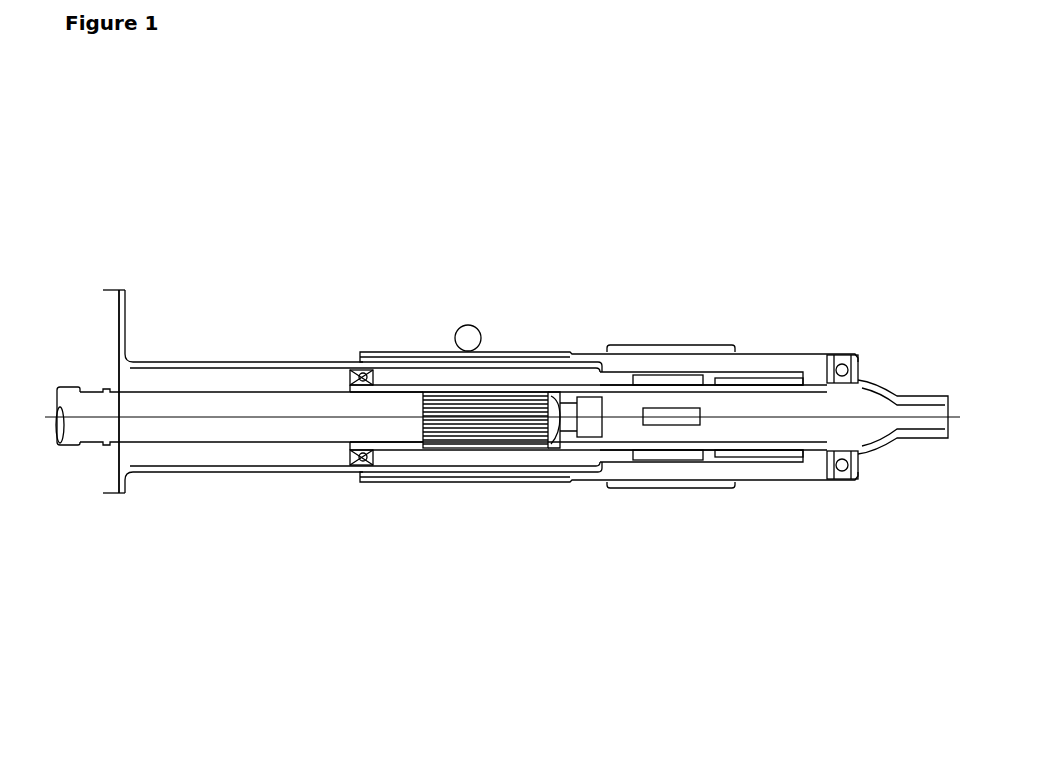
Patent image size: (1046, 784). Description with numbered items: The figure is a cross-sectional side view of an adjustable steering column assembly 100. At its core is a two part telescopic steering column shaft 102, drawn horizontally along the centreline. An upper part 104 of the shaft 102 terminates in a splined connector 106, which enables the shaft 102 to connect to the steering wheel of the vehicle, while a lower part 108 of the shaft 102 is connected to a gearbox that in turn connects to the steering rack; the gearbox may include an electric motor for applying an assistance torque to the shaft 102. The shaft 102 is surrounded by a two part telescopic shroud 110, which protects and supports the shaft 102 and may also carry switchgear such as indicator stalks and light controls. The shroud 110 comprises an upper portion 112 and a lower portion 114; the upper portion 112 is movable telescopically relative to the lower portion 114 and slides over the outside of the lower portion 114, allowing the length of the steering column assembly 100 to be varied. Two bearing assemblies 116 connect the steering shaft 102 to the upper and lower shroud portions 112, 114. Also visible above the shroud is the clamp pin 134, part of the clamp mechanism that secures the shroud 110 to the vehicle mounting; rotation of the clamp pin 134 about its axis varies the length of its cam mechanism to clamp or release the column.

The adjustable steering column assembly 100 is at (260, 122).
The telescopic steering column shaft 102 is at (258, 378).
The upper part 104 is at (712, 378).
The splined connector 106 is at (921, 395).
The lower part 108 is at (305, 442).
The telescopic shroud 110 is at (656, 531).
The upper portion 112 is at (808, 350).
The lower portion 114 is at (215, 470).
The bearing assemblies 116 is at (368, 458).
The clamp pin 134 is at (470, 325).